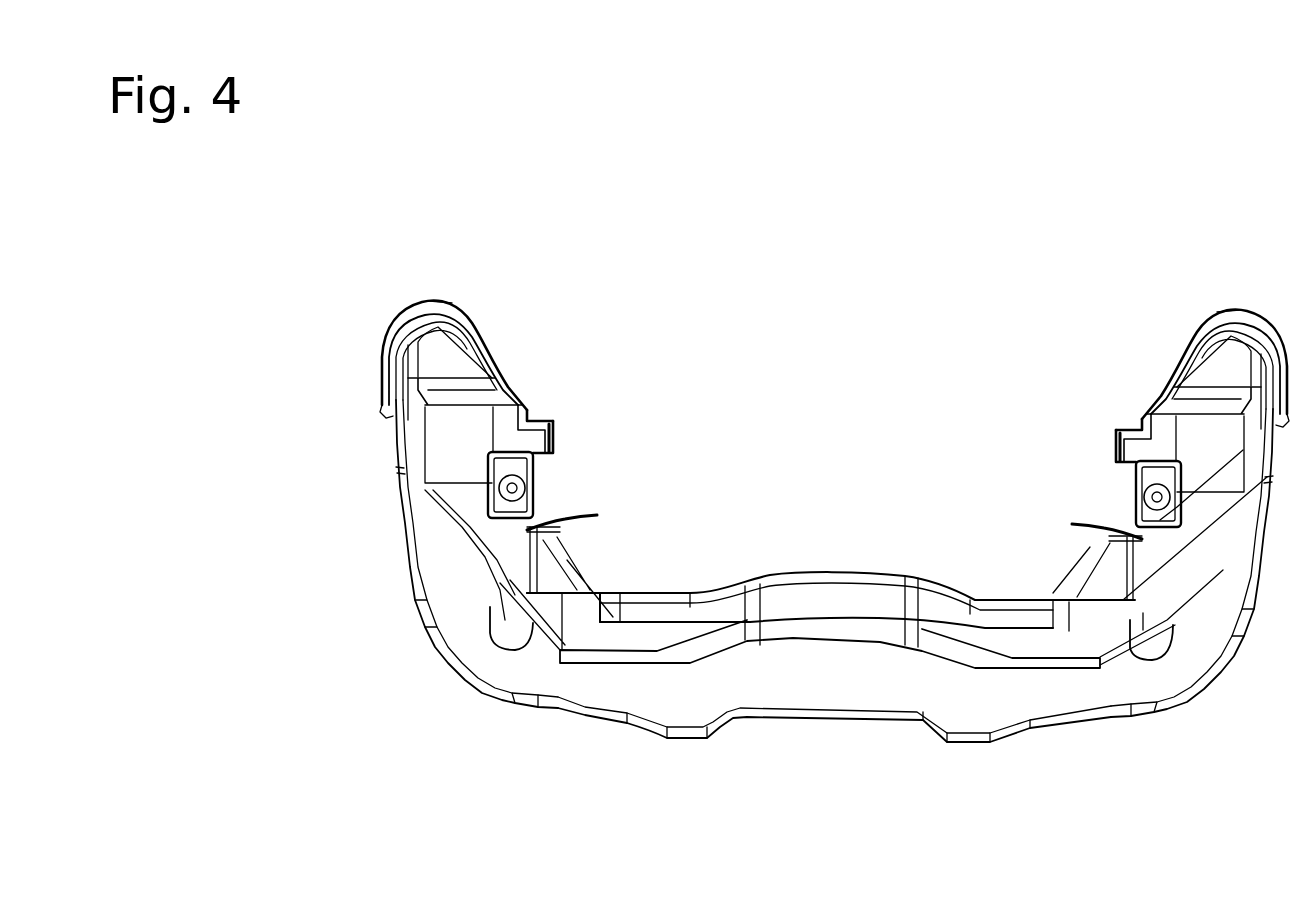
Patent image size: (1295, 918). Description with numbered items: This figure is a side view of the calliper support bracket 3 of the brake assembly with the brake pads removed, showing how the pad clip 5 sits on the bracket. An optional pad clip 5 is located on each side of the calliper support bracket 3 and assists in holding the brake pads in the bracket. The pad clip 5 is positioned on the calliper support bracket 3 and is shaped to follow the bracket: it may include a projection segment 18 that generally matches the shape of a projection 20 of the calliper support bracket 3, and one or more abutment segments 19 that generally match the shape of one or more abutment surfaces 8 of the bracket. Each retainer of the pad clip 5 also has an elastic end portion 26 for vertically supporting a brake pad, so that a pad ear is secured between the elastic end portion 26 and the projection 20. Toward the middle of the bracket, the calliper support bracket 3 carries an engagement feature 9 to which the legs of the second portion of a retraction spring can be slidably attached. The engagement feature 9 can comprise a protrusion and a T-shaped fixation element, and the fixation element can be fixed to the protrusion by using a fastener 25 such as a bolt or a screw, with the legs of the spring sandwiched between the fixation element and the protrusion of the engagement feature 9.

The calliper support bracket 3 is at (653, 703).
The pad clip 5 is at (513, 368).
The abutment surface 8 is at (512, 412).
The engagement feature 9 is at (528, 462).
The projection segment 18 is at (563, 433).
The abutment segment 19 is at (527, 410).
The projection 20 is at (552, 423).
The fastener 25 is at (510, 490).
The elastic end portion 26 is at (582, 518).